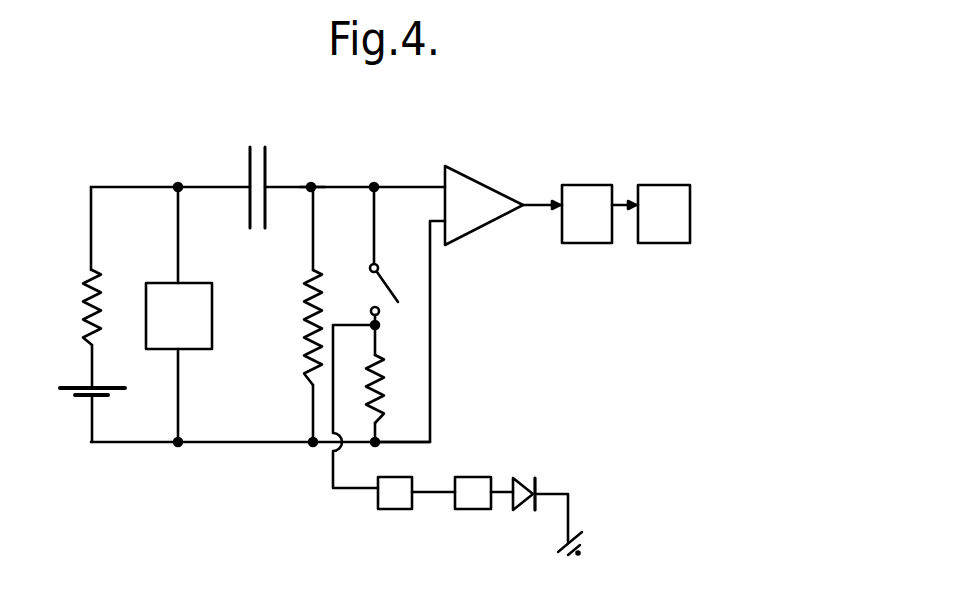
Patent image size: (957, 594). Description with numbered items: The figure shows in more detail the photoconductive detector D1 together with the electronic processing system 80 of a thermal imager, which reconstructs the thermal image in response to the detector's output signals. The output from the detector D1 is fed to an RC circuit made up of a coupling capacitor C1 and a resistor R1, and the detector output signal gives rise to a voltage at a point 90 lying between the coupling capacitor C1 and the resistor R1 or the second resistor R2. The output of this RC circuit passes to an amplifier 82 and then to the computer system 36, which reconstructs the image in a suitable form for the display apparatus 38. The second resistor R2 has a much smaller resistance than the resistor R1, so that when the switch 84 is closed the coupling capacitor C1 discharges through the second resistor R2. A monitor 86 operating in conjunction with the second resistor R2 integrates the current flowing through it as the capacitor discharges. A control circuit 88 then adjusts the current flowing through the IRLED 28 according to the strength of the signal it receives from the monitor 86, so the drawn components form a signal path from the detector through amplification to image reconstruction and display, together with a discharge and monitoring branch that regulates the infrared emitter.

The electronic processing system 80 is at (408, 127).
The point 90 is at (311, 182).
The coupling capacitor C1 is at (257, 145).
The detector D1 is at (212, 327).
The resistor R1 is at (303, 345).
The second resistor R2 is at (383, 377).
The switch 84 is at (397, 296).
The amplifier 82 is at (497, 188).
The computer system 36 is at (590, 185).
The display apparatus 38 is at (675, 185).
The monitor 86 is at (395, 512).
The control circuit 88 is at (470, 512).
The IRLED 28 is at (518, 480).